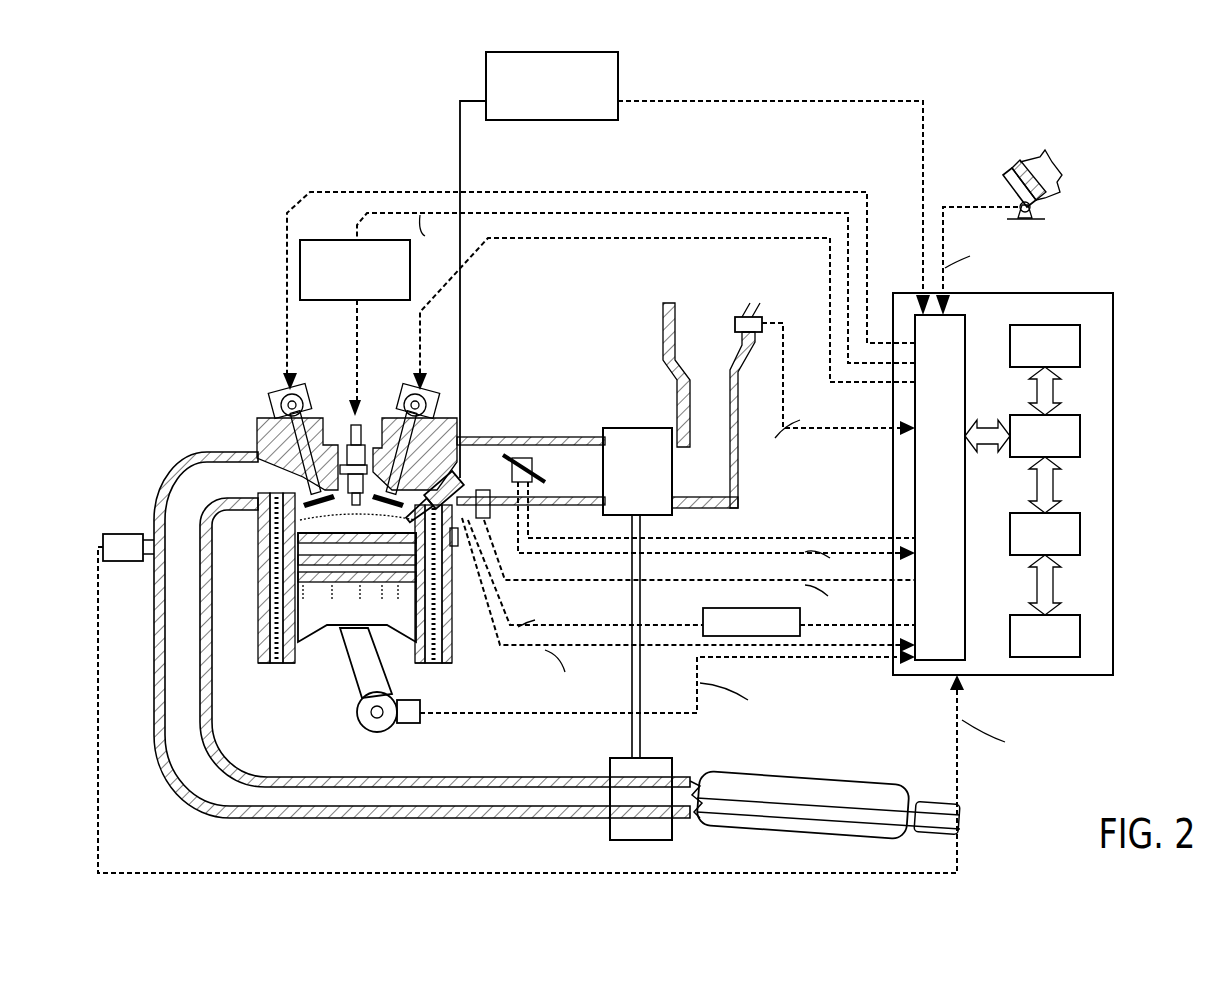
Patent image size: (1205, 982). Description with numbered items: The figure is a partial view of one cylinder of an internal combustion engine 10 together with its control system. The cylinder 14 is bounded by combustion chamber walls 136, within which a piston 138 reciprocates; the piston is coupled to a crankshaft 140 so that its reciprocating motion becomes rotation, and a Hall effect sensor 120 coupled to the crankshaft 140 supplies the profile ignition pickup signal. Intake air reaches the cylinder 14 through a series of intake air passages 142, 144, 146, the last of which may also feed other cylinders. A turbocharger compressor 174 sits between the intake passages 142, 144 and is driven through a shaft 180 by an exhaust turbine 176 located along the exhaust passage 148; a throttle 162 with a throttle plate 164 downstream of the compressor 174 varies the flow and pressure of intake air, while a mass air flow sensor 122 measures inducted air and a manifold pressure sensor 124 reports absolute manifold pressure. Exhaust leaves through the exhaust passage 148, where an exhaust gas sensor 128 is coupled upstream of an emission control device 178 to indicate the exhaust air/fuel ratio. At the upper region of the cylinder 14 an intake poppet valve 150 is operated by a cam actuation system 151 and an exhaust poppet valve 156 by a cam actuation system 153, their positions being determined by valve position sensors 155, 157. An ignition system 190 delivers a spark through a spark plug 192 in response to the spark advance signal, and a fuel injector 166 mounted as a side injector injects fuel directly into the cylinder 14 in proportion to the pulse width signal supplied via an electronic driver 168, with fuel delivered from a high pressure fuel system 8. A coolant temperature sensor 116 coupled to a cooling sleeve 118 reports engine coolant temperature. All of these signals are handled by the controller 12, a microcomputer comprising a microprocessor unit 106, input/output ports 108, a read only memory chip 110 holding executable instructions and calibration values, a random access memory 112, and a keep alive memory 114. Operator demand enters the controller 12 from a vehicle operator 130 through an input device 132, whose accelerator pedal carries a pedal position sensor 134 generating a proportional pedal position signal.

The internal combustion engine 10 is at (88, 126).
The high pressure fuel system 8 is at (618, 65).
The controller 12 is at (1108, 292).
The cylinder 14 is at (267, 532).
The microprocessor unit 106 is at (1085, 425).
The input/output ports 108 is at (968, 323).
The read only memory chip 110 is at (1085, 345).
The random access memory 112 is at (1085, 527).
The keep alive memory 114 is at (1085, 630).
The temperature sensor 116 is at (456, 548).
The cooling sleeve 118 is at (452, 650).
The Hall effect sensor 120 is at (410, 726).
The mass air flow sensor 122 is at (758, 317).
The manifold pressure sensor 124 is at (485, 522).
The exhaust gas sensor 128 is at (103, 538).
The vehicle operator 130 is at (1060, 172).
The input device 132 is at (1005, 185).
The pedal position sensor 134 is at (1038, 208).
The combustion chamber walls 136 is at (292, 665).
The piston 138 is at (345, 632).
The crankshaft 140 is at (365, 728).
The intake air passage 142 is at (692, 355).
The intake air passage 144 is at (563, 482).
The intake air passage 146 is at (464, 482).
The exhaust passage 148 is at (214, 490).
The intake poppet valve 150 is at (398, 472).
The cam actuation system 151 is at (408, 394).
The cam actuation system 153 is at (300, 395).
The valve position sensor 155 is at (432, 398).
The exhaust poppet valve 156 is at (270, 445).
The valve position sensor 157 is at (278, 400).
The throttle 162 is at (528, 455).
The throttle plate 164 is at (510, 458).
The fuel injector 166 is at (450, 463).
The electronic driver 168 is at (705, 609).
The compressor 174 is at (622, 428).
The exhaust turbine 176 is at (608, 830).
The emission control device 178 is at (872, 780).
The shaft 180 is at (641, 722).
The ignition system 190 is at (313, 240).
The spark plug 192 is at (349, 452).